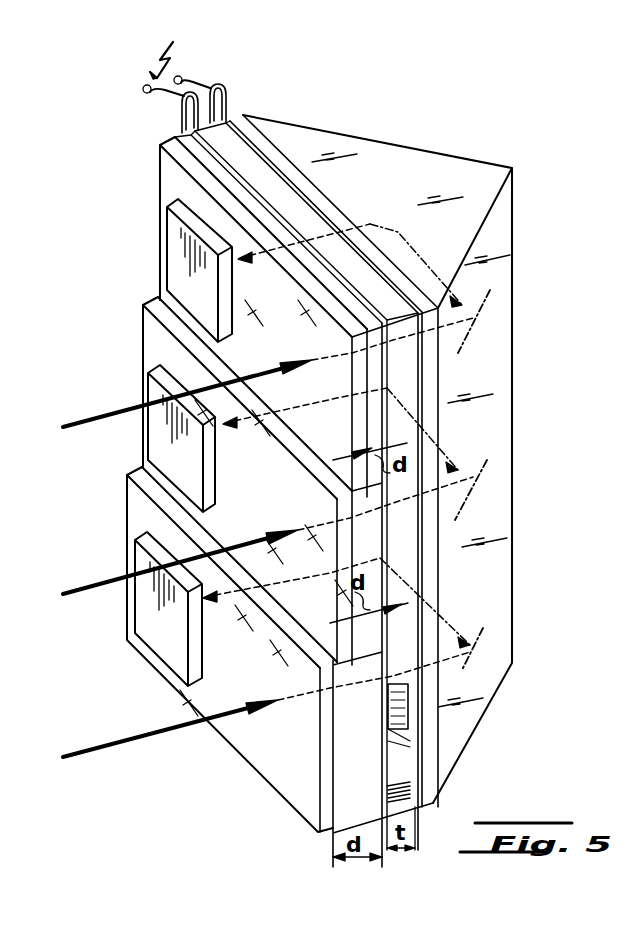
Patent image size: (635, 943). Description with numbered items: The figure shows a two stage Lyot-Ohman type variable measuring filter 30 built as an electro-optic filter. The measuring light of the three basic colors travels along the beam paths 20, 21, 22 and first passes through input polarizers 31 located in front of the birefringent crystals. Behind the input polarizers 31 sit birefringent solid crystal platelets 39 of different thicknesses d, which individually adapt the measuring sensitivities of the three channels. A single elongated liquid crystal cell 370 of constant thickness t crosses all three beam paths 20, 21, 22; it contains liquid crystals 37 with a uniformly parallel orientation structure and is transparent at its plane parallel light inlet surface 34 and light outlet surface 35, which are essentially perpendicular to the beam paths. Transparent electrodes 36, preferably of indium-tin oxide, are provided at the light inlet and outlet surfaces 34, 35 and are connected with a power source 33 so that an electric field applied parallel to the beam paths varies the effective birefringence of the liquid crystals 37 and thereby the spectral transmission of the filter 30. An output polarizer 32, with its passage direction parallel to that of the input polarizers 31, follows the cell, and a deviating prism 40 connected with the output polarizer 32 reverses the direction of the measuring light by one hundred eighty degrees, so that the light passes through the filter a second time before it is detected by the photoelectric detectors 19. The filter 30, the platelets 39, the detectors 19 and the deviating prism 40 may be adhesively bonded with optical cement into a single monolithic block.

The photoelectric detector 19 is at (175, 262).
The beam path 20 is at (92, 415).
The beam path 21 is at (85, 588).
The beam path 22 is at (115, 737).
The variable measuring filter 30 is at (108, 152).
The input polarizer 31 is at (310, 428).
The output polarizer 32 is at (275, 152).
The power source 33 is at (160, 54).
The light inlet surface 34 is at (368, 528).
The light outlet surface 35 is at (440, 532).
The transparent electrode 36 is at (206, 160).
The liquid crystal 37 is at (395, 708).
The birefringent solid crystal platelet 39 is at (352, 374).
The deviating prism 40 is at (512, 236).
The liquid crystal cell 370 is at (408, 748).